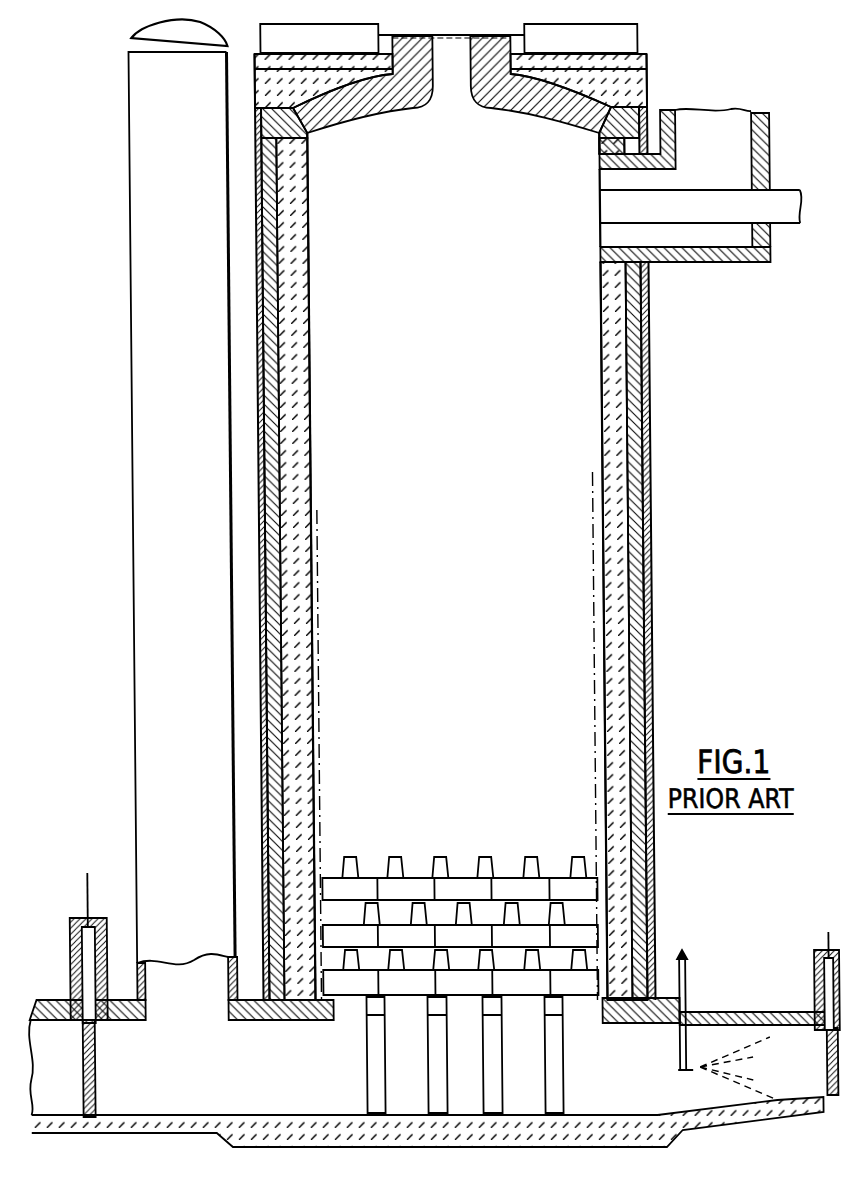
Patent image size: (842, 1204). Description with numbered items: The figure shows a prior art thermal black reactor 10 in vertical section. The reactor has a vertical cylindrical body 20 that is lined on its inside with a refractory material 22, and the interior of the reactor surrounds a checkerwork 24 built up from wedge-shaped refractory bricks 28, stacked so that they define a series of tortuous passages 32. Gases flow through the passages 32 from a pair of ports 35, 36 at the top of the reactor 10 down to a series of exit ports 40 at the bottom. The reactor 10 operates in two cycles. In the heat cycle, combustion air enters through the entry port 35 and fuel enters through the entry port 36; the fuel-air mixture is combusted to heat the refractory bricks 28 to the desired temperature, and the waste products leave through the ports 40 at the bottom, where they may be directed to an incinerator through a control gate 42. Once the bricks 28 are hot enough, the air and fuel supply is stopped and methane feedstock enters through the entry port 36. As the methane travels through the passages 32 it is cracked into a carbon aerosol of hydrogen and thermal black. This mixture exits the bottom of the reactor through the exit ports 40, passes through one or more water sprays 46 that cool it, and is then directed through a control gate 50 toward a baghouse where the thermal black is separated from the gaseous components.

The thermal black reactor 10 is at (698, 434).
The vertical cylindrical body 20 is at (647, 542).
The refractory material 22 is at (607, 357).
The checkerwork 24 is at (578, 913).
The wedge-shaped refractory bricks 28 is at (455, 890).
The tortuous passages 32 is at (557, 867).
The entry port 35 is at (722, 130).
The entry port 36 is at (782, 200).
The exit ports 40 is at (428, 1058).
The control gate 42 is at (87, 1077).
The water sprays 46 is at (683, 1061).
The control gate 50 is at (816, 1060).